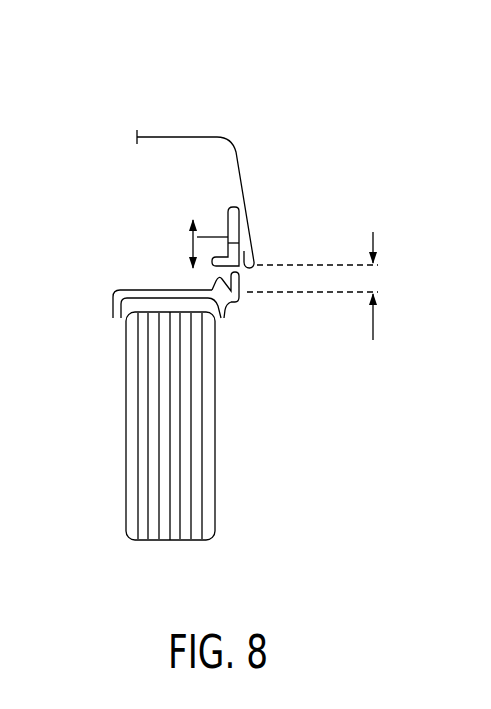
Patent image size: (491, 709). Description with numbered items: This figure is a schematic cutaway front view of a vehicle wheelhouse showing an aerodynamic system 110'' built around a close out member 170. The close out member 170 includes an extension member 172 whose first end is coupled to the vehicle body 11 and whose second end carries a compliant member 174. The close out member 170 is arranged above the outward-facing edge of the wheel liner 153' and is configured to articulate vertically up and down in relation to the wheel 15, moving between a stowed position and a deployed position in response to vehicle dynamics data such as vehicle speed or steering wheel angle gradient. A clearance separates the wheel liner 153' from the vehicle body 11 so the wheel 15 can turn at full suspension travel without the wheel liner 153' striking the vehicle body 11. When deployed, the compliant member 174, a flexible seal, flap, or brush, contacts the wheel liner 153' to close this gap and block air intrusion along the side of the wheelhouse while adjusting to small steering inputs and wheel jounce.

The aerodynamic system 110'' is at (196, 335).
The vehicle body 11 is at (248, 192).
The close out member 170 is at (225, 213).
The extension member 172 is at (236, 236).
The wheel liner 153' is at (139, 294).
The compliant member 174 is at (248, 314).
The wheel 15 is at (180, 540).